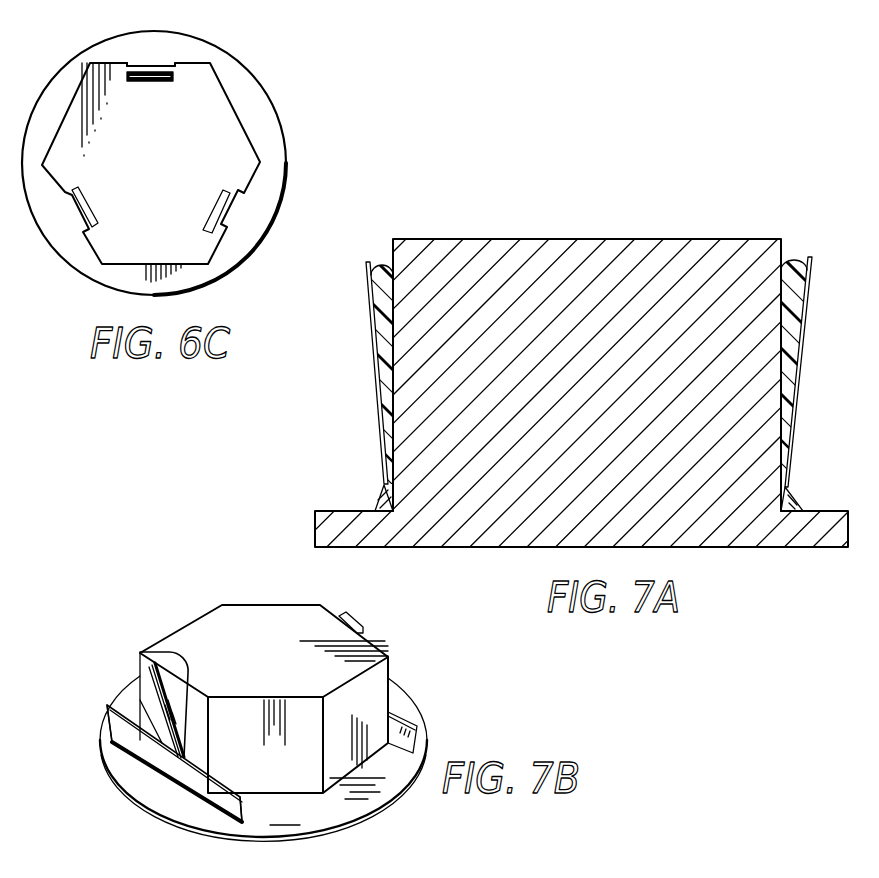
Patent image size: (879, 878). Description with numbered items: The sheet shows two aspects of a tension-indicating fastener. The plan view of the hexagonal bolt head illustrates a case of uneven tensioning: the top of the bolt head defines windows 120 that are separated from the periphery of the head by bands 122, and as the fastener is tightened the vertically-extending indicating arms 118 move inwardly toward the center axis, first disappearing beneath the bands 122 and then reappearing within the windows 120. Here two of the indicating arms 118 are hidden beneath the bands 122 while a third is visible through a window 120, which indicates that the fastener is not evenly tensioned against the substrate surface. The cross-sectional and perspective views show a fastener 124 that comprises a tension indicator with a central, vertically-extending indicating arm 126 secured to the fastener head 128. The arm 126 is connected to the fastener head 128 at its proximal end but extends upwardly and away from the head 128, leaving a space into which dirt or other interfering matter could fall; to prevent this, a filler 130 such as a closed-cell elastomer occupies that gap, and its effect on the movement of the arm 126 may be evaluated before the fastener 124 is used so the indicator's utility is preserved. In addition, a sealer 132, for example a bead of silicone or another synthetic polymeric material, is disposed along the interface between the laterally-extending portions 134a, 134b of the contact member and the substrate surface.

In FIG. 6C, the indicating arms 118 is at (143, 72).
In FIG. 6C, the windows 120 is at (172, 82).
In FIG. 6C, the bands 122 is at (226, 206).
In FIG. 7A, the fastener 124 is at (741, 216).
In FIG. 7B, the fastener 124 is at (162, 612).
In FIG. 7A, the indicating arm 126 is at (374, 384).
In FIG. 7B, the indicating arm 126 is at (162, 690).
In FIG. 7A, the fastener head 128 is at (583, 239).
In FIG. 7B, the fastener head 128 is at (250, 617).
In FIG. 7A, the filler 130 is at (381, 266).
In FIG. 7B, the filler 130 is at (187, 678).
In FIG. 7A, the sealer 132 is at (372, 497).
In FIG. 7B, the sealer 132 is at (160, 775).
In FIG. 7B, the laterally-extending portion of the contact member 134a is at (120, 732).
In FIG. 7B, the laterally-extending portion of the contact member 134b is at (223, 797).